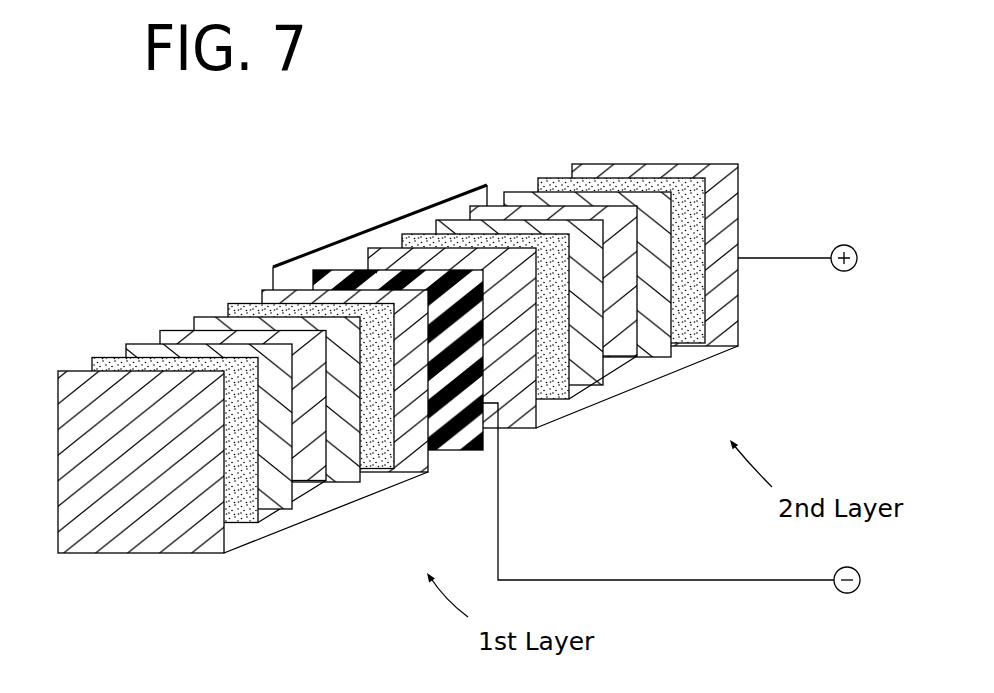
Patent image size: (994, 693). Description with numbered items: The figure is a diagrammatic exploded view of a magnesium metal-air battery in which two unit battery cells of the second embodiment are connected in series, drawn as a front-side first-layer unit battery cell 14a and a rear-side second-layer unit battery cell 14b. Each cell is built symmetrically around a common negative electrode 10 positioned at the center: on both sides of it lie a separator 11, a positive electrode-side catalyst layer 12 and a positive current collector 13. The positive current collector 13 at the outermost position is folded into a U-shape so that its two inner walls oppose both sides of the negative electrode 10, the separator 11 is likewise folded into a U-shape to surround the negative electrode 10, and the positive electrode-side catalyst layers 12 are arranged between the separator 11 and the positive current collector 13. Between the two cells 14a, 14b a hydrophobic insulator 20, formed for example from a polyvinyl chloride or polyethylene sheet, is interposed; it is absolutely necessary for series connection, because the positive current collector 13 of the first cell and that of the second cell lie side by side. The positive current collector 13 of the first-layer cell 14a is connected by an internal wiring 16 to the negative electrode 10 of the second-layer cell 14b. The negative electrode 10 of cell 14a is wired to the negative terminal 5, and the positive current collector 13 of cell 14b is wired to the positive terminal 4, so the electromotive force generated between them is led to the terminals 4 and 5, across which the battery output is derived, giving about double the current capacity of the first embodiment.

The positive terminal 4 is at (852, 247).
The negative terminal 5 is at (856, 570).
The negative electrode 10 is at (340, 483).
The separator 11 is at (310, 508).
The positive electrode-side catalyst layer 12 is at (280, 537).
The positive current collector 13 is at (227, 555).
The unit battery cell of the front-side first layer 14a is at (244, 243).
The unit battery cell of the rear-side second layer 14b is at (553, 118).
The internal wiring 16 is at (334, 246).
The hydrophobic insulator 20 is at (322, 281).